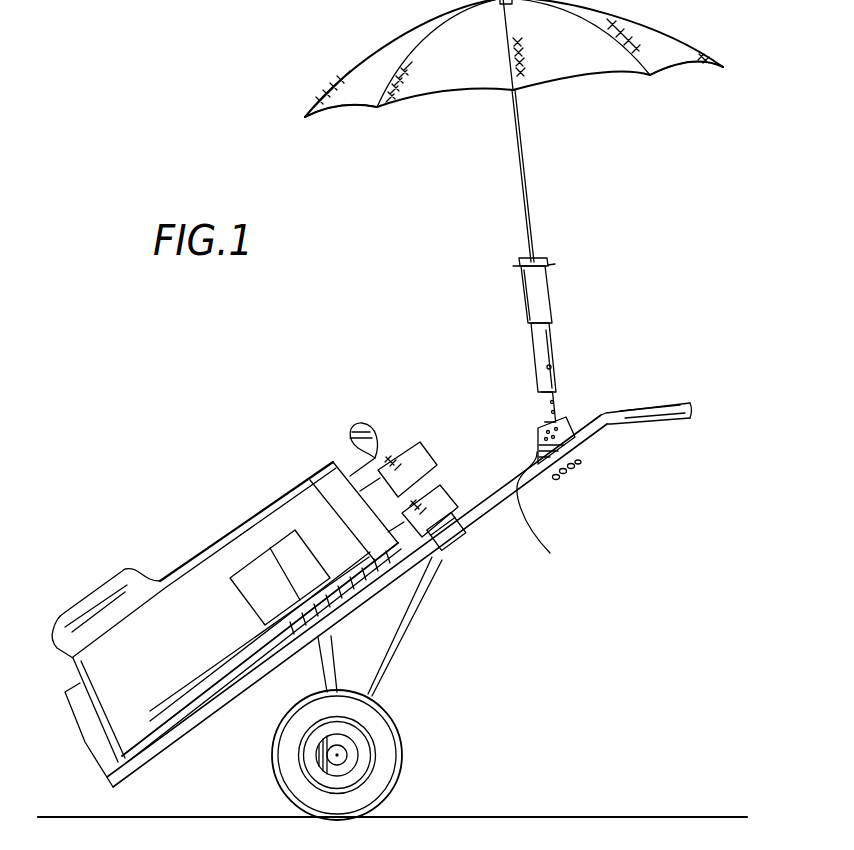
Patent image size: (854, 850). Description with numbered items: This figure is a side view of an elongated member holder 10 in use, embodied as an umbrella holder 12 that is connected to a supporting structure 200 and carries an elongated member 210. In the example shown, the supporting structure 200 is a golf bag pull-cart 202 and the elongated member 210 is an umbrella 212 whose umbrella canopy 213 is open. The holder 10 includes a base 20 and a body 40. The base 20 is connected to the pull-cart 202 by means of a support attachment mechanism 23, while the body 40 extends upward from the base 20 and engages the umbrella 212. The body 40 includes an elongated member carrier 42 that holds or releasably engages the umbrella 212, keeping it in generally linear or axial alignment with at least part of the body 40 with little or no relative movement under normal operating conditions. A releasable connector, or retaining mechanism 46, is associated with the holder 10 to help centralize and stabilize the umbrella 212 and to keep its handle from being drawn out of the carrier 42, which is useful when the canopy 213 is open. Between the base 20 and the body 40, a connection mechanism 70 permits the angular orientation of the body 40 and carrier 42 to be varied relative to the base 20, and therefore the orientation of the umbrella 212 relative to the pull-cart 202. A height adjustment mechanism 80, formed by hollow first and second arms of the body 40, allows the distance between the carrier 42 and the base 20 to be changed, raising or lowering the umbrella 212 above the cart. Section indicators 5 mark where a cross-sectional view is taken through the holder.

The section line indicator 5 is at (490, 445).
The elongated member holder 10 is at (562, 336).
The umbrella holder 12 is at (570, 302).
The base 20 is at (549, 499).
The support attachment mechanism 23 is at (592, 453).
The body 40 is at (536, 310).
The elongated member carrier 42 is at (522, 296).
The retaining mechanism 46 is at (510, 255).
The connection mechanism 70 is at (567, 470).
The height adjustment mechanism 80 is at (535, 385).
The supporting structure 200 is at (371, 611).
The golf bag pull-cart 202 is at (452, 552).
The elongated member 210 is at (506, 88).
The umbrella 212 is at (345, 110).
The umbrella canopy 213 is at (652, 77).